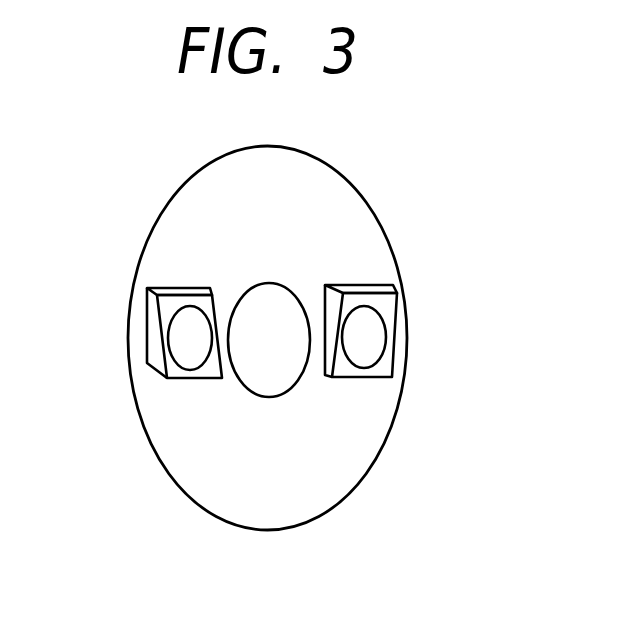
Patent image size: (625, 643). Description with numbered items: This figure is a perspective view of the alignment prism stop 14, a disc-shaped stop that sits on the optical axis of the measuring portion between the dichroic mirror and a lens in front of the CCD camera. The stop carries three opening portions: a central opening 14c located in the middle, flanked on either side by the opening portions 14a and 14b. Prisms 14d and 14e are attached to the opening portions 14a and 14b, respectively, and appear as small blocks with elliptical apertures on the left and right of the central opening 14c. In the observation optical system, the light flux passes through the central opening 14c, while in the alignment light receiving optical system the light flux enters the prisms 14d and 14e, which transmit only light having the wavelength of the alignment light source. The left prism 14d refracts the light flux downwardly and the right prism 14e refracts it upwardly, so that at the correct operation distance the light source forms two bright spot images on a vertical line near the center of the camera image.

The alignment prism stop 14 is at (322, 212).
The opening portion 14a is at (182, 338).
The opening portion 14b is at (360, 330).
The central opening 14c is at (265, 337).
The prism 14d is at (177, 378).
The prism 14e is at (377, 368).